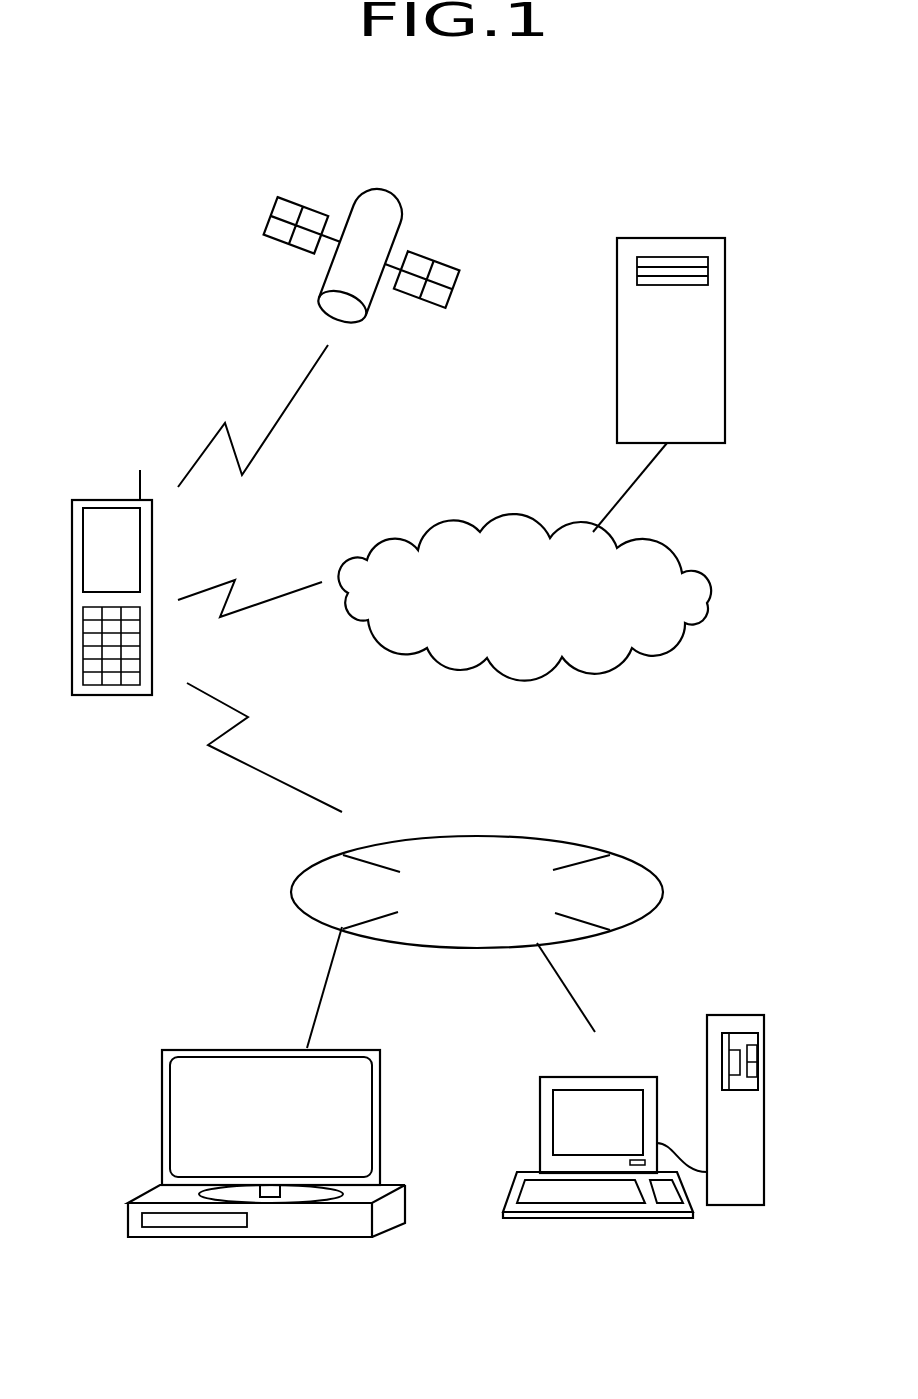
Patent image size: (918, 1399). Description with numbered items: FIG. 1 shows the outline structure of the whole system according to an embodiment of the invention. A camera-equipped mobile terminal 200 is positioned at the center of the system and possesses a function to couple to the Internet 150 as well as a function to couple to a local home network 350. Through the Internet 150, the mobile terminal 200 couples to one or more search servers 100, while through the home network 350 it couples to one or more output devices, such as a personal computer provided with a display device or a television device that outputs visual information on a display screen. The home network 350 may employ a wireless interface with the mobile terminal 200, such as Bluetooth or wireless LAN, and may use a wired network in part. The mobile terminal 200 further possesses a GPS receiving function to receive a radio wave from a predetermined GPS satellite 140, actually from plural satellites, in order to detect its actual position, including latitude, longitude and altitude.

The search server 100 is at (672, 238).
The GPS satellite 140 is at (393, 186).
The Internet 150 is at (518, 522).
The camera-equipped mobile terminal 200 is at (110, 500).
The home network 350 is at (542, 838).